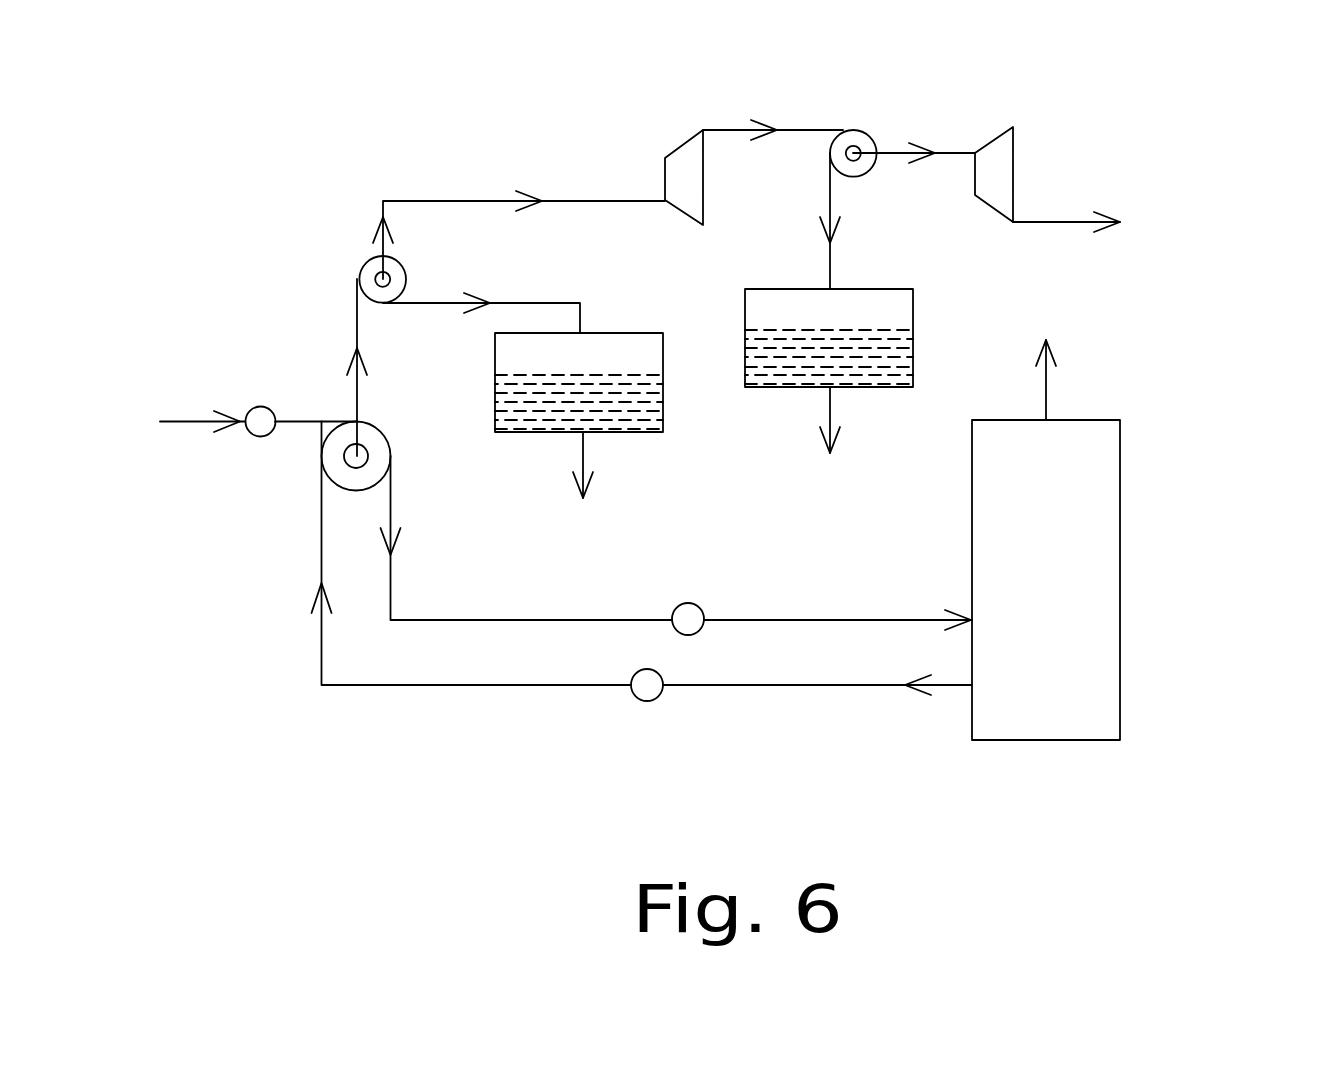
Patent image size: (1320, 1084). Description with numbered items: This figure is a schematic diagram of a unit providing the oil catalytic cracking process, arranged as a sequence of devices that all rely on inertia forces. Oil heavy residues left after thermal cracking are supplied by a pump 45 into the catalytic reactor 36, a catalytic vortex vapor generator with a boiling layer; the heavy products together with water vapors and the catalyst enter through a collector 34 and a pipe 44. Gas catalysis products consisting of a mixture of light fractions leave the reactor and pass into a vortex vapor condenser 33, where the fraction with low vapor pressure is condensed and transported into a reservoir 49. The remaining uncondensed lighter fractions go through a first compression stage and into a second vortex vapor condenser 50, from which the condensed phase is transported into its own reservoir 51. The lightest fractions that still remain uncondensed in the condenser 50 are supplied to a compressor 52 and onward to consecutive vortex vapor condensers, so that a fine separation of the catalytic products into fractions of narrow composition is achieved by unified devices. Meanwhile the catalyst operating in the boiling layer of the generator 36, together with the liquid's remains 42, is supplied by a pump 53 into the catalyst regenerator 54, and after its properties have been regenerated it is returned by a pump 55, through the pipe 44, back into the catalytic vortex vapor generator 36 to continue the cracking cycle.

The vortex vapor condenser 33 is at (367, 270).
The collector 34 is at (325, 412).
The catalytic reactor 36 is at (348, 472).
The liquid's remains 42 is at (392, 590).
The pipe 44 is at (320, 580).
The pump 45 is at (256, 407).
The reservoir 49 is at (683, 178).
The vortex vapor condenser 50 is at (850, 140).
The reservoir 51 is at (827, 308).
The compressor 52 is at (995, 175).
The pump 53 is at (686, 604).
The catalyst regenerator 54 is at (1045, 588).
The pump 55 is at (636, 672).